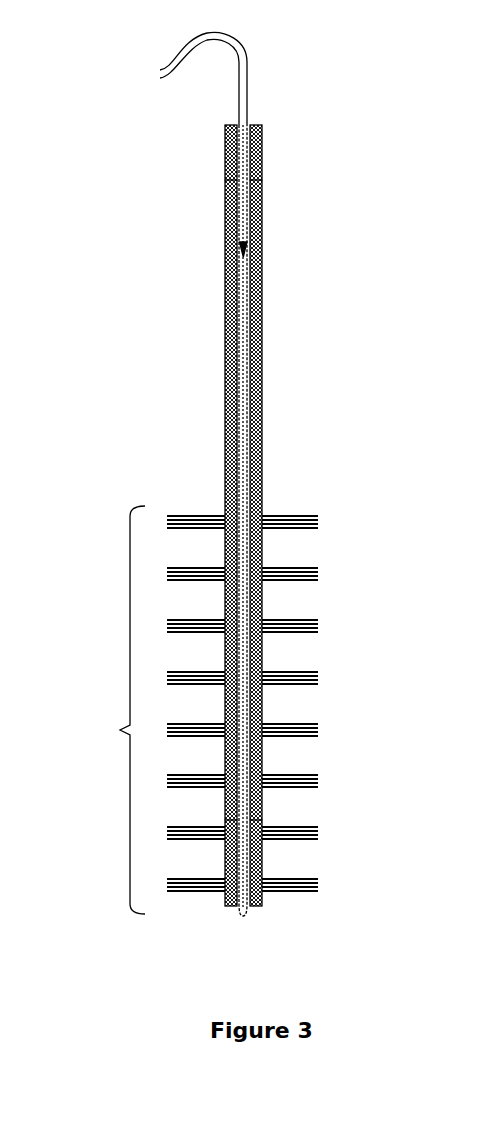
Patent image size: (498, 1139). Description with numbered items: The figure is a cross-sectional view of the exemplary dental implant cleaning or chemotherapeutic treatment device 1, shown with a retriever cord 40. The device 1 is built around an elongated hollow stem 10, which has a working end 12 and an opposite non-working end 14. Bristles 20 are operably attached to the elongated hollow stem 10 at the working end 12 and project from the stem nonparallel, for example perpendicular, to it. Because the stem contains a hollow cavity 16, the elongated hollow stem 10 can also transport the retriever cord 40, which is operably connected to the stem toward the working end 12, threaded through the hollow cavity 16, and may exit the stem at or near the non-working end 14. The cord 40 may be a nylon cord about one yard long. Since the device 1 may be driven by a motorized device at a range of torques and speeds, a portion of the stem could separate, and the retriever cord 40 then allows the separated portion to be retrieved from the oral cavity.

The dental implant cleaning or chemotherapeutic treatment device 1 is at (86, 163).
The elongated hollow stem 10 is at (262, 456).
The working end 12 is at (261, 855).
The non-working end 14 is at (262, 141).
The hollow cavity 16 is at (262, 218).
The bristles 20 is at (120, 730).
The retriever cord 40 is at (248, 82).